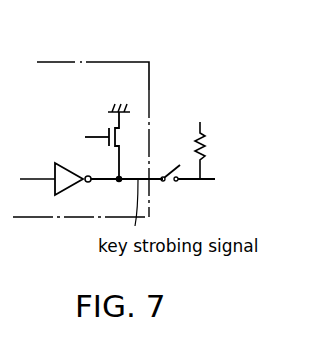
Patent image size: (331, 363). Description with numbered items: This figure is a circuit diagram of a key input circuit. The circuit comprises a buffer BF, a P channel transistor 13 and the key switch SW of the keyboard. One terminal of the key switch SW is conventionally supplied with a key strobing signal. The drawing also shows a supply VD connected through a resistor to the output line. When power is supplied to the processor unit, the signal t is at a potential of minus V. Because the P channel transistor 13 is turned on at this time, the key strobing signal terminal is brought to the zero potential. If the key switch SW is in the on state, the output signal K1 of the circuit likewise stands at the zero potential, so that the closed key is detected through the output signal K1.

The P channel transistor 13 is at (125, 143).
The buffer BF is at (62, 183).
The key switch SW is at (168, 185).
The supply voltage resistor VD is at (200, 142).
The output signal K1 is at (206, 181).
The signal t is at (93, 132).